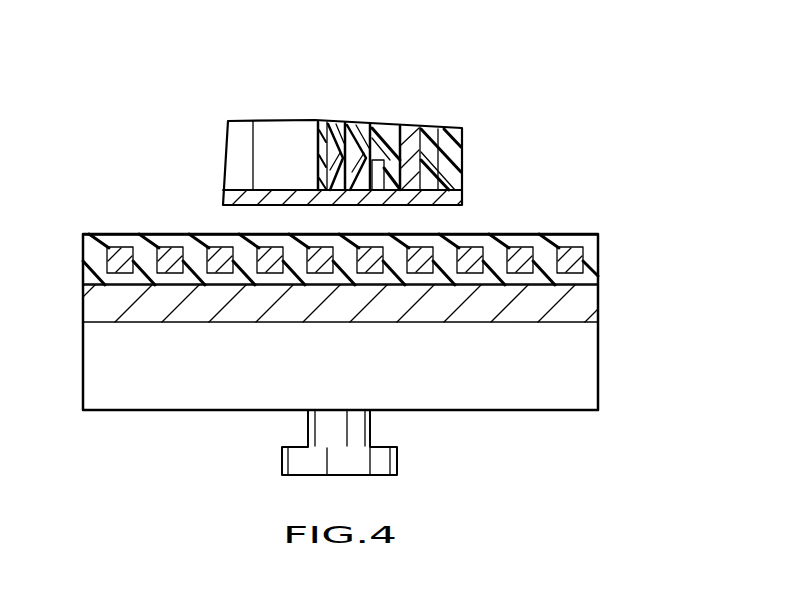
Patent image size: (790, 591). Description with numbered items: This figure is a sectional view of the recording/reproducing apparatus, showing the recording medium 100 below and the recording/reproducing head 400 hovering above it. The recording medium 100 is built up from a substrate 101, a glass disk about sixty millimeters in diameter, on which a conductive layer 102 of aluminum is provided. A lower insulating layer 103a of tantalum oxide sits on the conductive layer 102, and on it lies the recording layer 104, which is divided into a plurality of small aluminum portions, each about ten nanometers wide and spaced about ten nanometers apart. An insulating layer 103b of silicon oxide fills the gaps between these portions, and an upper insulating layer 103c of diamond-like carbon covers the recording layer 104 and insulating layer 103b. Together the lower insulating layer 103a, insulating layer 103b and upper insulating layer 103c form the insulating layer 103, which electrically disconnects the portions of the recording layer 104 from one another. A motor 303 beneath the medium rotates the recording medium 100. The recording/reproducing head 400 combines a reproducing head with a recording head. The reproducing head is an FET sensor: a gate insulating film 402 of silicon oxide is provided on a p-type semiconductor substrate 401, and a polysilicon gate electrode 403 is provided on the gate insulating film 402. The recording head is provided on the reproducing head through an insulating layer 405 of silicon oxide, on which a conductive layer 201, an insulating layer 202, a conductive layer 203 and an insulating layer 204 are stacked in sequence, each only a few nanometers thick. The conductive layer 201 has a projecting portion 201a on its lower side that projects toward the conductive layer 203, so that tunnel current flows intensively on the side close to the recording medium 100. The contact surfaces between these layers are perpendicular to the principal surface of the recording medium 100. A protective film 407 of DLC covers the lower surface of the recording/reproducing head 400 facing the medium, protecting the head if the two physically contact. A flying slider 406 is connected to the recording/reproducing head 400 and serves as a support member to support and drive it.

The recording medium 100 is at (552, 411).
The substrate 101 is at (585, 363).
The conductive layer 102 is at (588, 305).
The insulating layer 103 is at (676, 217).
The lower insulating layer 103a is at (575, 278).
The insulating layer 103b is at (553, 258).
The upper insulating layer 103c is at (575, 240).
The recording layer 104 is at (517, 243).
The conductive layer 201 is at (372, 127).
The projecting portion 201a is at (383, 184).
The insulating layer 202 is at (390, 129).
The conductive layer 203 is at (418, 128).
The insulating layer 204 is at (442, 127).
The motor 303 is at (295, 458).
The recording/reproducing head 400 is at (463, 152).
The semiconductor substrate 401 is at (278, 120).
The gate insulating film 402 is at (322, 121).
The gate electrode 403 is at (340, 122).
The insulating layer 405 is at (357, 125).
The flying slider 406 is at (240, 120).
The protective film 407 is at (222, 193).